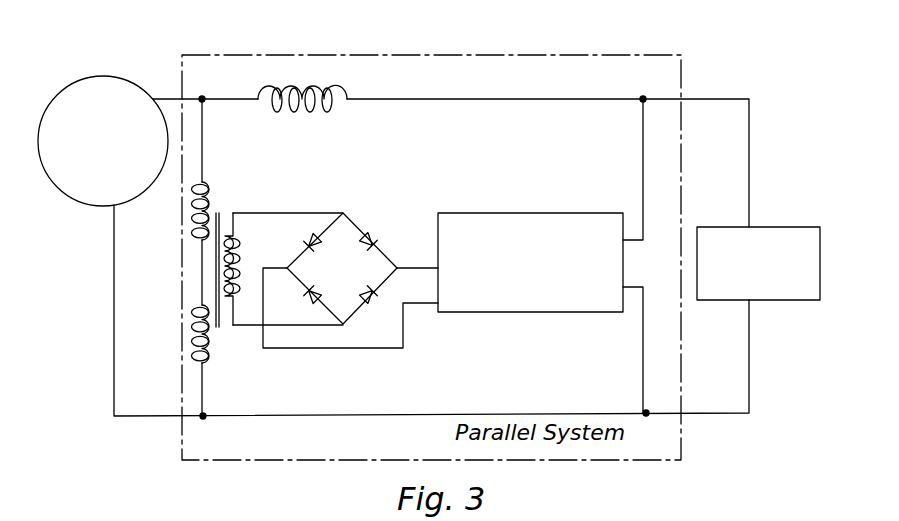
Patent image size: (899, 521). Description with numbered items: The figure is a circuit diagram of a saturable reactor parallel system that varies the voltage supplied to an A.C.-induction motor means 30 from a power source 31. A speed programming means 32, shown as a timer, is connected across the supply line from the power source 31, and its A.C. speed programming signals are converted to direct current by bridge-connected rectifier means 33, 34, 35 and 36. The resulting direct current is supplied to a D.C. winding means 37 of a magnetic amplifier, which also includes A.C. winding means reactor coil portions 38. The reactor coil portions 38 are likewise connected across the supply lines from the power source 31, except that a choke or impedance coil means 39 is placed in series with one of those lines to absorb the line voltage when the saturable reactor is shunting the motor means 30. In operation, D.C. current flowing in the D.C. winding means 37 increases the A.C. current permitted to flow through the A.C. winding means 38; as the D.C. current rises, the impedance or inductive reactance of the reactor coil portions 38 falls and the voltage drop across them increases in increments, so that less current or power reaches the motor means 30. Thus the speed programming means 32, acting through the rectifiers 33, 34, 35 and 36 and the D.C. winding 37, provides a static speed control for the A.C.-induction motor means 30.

The A.C.-induction motor means 30 is at (98, 75).
The power source 31 is at (781, 227).
The speed programming means 32 is at (535, 213).
The rectifier means 33 is at (307, 247).
The rectifier means 34 is at (375, 240).
The rectifier means 35 is at (368, 302).
The rectifier means 36 is at (317, 307).
The D.C. winding means 37 is at (240, 270).
The A.C. winding means reactor coil portions 38 is at (195, 333).
The coil means 39 is at (300, 85).